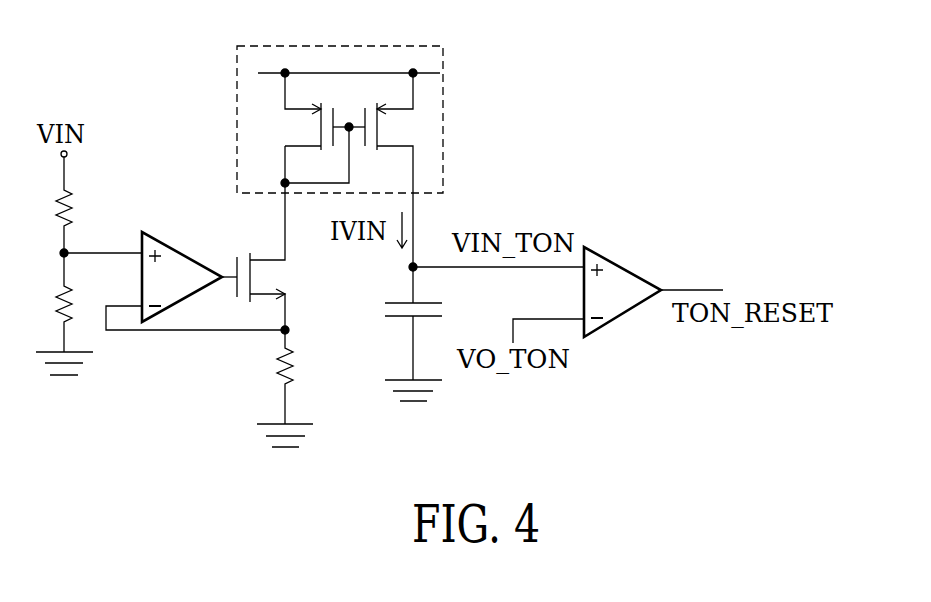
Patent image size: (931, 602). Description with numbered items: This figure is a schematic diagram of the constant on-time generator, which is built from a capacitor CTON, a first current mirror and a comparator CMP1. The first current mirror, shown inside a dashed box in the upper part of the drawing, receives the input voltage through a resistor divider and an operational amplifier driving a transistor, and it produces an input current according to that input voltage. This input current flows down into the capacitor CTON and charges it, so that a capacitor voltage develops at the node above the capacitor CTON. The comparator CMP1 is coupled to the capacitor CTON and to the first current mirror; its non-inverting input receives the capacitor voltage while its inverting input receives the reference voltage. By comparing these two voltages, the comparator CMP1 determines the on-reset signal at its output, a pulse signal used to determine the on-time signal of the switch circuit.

The comparator CMP1 is at (642, 244).
The capacitor CTON is at (373, 334).